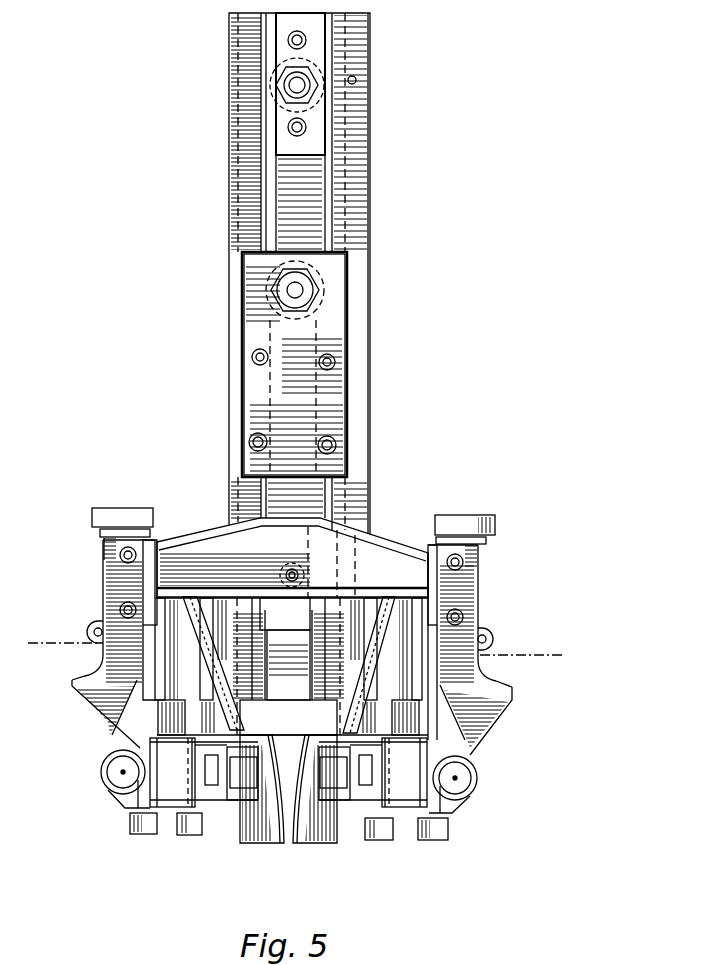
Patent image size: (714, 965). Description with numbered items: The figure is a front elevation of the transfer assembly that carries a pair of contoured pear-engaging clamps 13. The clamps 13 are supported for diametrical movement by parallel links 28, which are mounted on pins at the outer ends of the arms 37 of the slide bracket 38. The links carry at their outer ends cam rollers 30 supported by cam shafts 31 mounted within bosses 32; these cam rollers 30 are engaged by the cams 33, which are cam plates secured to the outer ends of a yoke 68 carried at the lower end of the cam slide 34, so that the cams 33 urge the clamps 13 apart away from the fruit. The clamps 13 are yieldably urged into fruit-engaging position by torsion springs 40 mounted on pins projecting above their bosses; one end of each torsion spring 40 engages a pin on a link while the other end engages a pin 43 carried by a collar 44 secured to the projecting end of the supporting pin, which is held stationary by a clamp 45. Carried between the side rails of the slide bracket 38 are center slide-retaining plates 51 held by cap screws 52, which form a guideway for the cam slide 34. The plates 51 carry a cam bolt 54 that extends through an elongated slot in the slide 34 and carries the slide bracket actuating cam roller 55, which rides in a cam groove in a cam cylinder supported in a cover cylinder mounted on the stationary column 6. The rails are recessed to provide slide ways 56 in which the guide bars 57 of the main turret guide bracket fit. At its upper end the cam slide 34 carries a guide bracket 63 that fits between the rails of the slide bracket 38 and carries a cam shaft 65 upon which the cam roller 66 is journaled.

The stationary column 6 is at (42, 665).
The contoured pear-engaging clamps 13 is at (272, 835).
The parallel links 28 is at (170, 818).
The cam rollers 30 is at (112, 796).
The cam shafts 31 is at (108, 774).
The bosses 32 is at (104, 756).
The cams 33 is at (100, 716).
The cam slide 34 is at (310, 494).
The arms 37 is at (200, 636).
The slide bracket 38 is at (368, 194).
The torsion springs 40 is at (106, 553).
The pin 43 is at (104, 534).
The collar 44 is at (100, 512).
The clamp 45 is at (104, 602).
The center slide-retaining plates 51 is at (340, 340).
The cap screws 52 is at (332, 446).
The cam bolt 54 is at (298, 292).
The slide bracket actuating cam roller 55 is at (322, 278).
The slide ways 56 is at (240, 56).
The guide bars 57 is at (332, 364).
The guide bracket 63 is at (325, 118).
The cam shaft 65 is at (300, 85).
The cam roller 66 is at (370, 66).
The yoke 68 is at (388, 552).